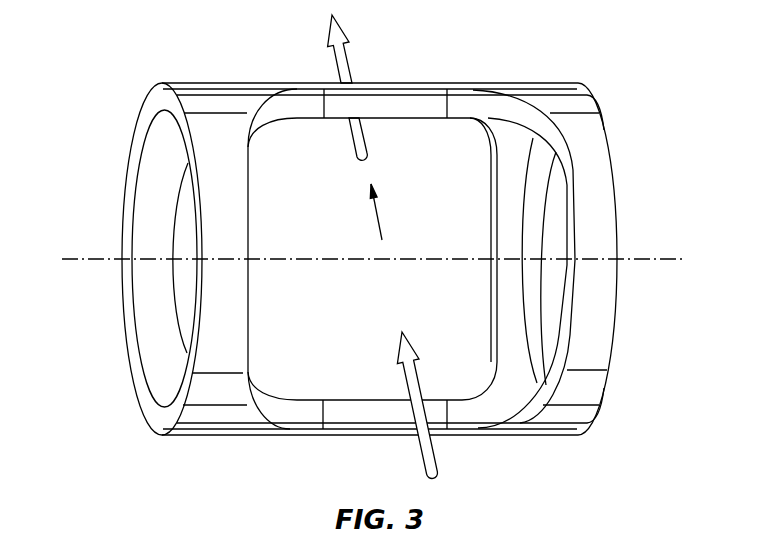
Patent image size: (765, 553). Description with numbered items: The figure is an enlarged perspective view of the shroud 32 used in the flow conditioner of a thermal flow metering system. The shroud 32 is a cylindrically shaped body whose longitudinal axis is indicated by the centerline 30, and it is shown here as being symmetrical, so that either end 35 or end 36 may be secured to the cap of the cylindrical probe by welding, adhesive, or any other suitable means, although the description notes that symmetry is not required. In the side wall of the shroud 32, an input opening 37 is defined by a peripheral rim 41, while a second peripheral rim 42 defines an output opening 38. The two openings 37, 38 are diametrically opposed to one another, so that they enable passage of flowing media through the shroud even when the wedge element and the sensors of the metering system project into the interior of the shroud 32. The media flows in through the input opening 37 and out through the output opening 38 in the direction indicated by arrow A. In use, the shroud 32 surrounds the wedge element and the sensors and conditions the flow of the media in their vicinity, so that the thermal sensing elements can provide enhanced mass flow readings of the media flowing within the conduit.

The centerline 30 is at (101, 263).
The shroud 32 is at (503, 62).
The end of the shroud 35 is at (619, 238).
The end of the shroud 36 is at (122, 202).
The input opening 37 is at (438, 457).
The output opening 38 is at (353, 59).
The peripheral rim 41 is at (298, 108).
The peripheral rim 42 is at (186, 242).
The arrow A is at (369, 212).